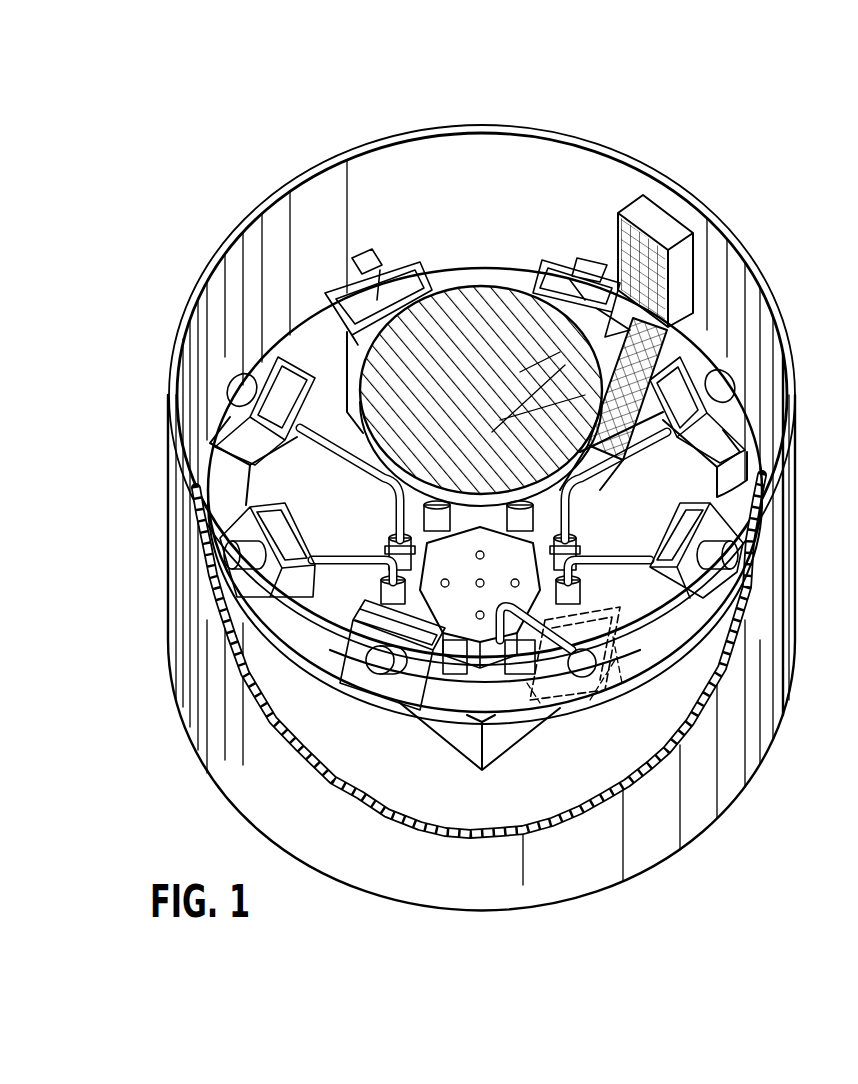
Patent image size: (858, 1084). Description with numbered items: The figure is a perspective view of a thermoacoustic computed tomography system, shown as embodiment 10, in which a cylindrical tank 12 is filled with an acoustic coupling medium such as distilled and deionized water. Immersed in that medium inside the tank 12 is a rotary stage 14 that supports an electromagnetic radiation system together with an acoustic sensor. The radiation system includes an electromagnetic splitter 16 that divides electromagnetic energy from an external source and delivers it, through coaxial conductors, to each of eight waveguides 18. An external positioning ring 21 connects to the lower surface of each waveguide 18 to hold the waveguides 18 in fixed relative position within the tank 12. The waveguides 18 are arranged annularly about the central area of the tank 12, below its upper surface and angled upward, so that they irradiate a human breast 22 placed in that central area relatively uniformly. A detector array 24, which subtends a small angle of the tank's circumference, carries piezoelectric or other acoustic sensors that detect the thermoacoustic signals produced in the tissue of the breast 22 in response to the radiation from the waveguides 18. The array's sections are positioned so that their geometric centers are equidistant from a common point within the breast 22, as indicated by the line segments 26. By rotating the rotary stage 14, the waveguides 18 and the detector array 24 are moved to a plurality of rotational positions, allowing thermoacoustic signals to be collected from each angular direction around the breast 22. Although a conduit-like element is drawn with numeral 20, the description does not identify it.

The embodiment 10 is at (766, 177).
The tank 12 is at (785, 600).
The rotary stage 14 is at (520, 728).
The electromagnetic splitter 16 is at (470, 574).
The waveguides 18 is at (398, 262).
The conduit 20 is at (353, 470).
The external positioning ring 21 is at (471, 268).
The human breast 22 is at (425, 421).
The detector array 24 is at (633, 213).
The line segments 26 is at (545, 455).